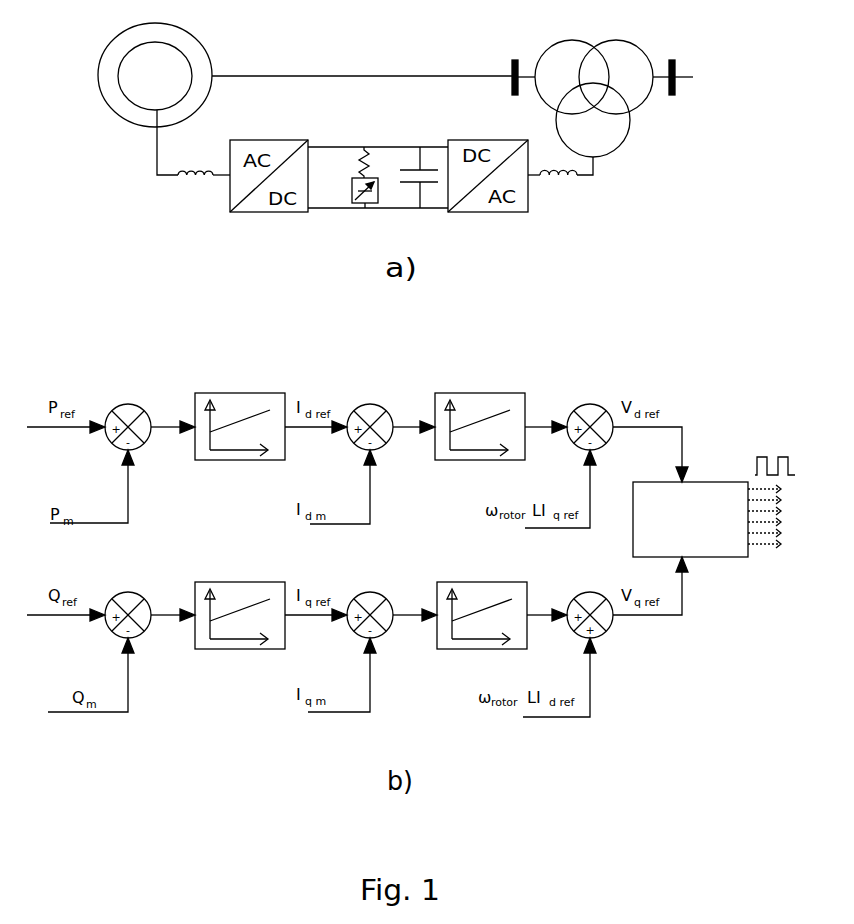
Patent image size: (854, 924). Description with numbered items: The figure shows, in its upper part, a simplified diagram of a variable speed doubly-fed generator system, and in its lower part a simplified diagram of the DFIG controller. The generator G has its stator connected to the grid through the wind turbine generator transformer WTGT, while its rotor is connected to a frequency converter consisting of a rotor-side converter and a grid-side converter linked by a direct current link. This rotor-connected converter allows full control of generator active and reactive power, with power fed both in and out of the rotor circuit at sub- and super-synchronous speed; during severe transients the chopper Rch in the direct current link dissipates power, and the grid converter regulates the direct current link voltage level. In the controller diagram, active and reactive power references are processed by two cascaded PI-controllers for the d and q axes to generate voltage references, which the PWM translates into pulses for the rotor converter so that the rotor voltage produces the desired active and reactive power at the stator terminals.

The generator G is at (155, 75).
The wind turbine generator transformer WTGT is at (594, 87).
The chopper Rch is at (349, 177).
The element PWM is at (714, 507).